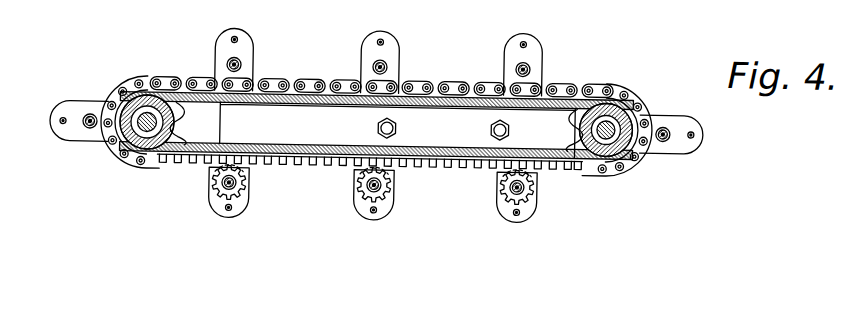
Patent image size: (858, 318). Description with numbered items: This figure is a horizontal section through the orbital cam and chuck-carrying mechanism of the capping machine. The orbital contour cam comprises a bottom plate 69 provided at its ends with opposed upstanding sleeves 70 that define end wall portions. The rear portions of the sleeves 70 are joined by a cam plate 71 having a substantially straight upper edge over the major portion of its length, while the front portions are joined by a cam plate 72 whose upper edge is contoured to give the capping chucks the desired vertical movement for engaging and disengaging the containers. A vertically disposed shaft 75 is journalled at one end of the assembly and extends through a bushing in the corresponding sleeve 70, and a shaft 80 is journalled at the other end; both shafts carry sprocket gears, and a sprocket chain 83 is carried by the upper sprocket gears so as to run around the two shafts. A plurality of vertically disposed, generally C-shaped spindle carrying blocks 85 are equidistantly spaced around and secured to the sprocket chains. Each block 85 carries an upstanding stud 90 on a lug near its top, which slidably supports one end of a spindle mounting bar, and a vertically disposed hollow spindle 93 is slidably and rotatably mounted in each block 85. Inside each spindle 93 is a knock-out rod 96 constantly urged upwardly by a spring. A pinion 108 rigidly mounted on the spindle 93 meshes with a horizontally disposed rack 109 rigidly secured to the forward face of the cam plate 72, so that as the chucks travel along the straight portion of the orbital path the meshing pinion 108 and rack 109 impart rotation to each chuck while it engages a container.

The bottom plate 69 is at (376, 130).
The sleeves 70 is at (121, 98).
The cam plate 71 is at (333, 104).
The cam plate 72 is at (304, 132).
The shaft 75 is at (148, 117).
The shaft 80 is at (611, 120).
The sprocket chain 83 is at (415, 77).
The spindle carrying blocks 85 is at (252, 41).
The stud 90 is at (236, 36).
The hollow spindle 93 is at (241, 62).
The knock-out rod 96 is at (531, 63).
The pinion 108 is at (213, 186).
The rack 109 is at (318, 164).